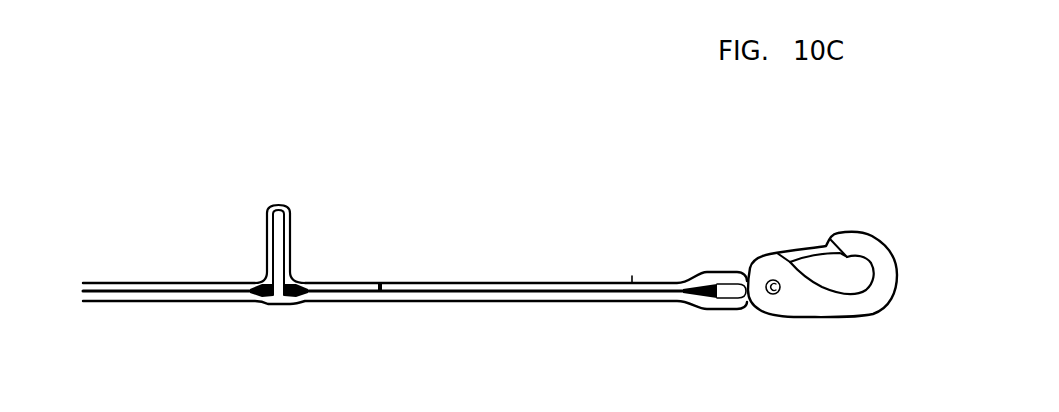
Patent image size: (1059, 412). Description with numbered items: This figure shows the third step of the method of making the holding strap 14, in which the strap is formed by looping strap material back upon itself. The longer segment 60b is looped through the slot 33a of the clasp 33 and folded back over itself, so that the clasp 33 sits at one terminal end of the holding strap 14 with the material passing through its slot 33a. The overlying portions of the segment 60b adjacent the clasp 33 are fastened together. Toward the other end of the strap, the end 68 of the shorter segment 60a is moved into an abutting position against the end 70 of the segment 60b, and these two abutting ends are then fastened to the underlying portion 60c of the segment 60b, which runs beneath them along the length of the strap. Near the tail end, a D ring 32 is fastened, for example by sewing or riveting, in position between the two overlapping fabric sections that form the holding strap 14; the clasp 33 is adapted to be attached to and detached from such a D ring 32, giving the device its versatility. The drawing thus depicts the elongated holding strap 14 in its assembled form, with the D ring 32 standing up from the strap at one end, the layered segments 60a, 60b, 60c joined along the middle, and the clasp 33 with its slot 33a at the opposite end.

The holding strap 14 is at (513, 301).
The D ring 32 is at (277, 205).
The clasp 33 is at (867, 237).
The slot 33a is at (732, 290).
The segment 60a is at (342, 277).
The longer segment 60b is at (587, 281).
The underlying portion 60c is at (395, 302).
The end 68 is at (366, 282).
The end 70 is at (408, 277).